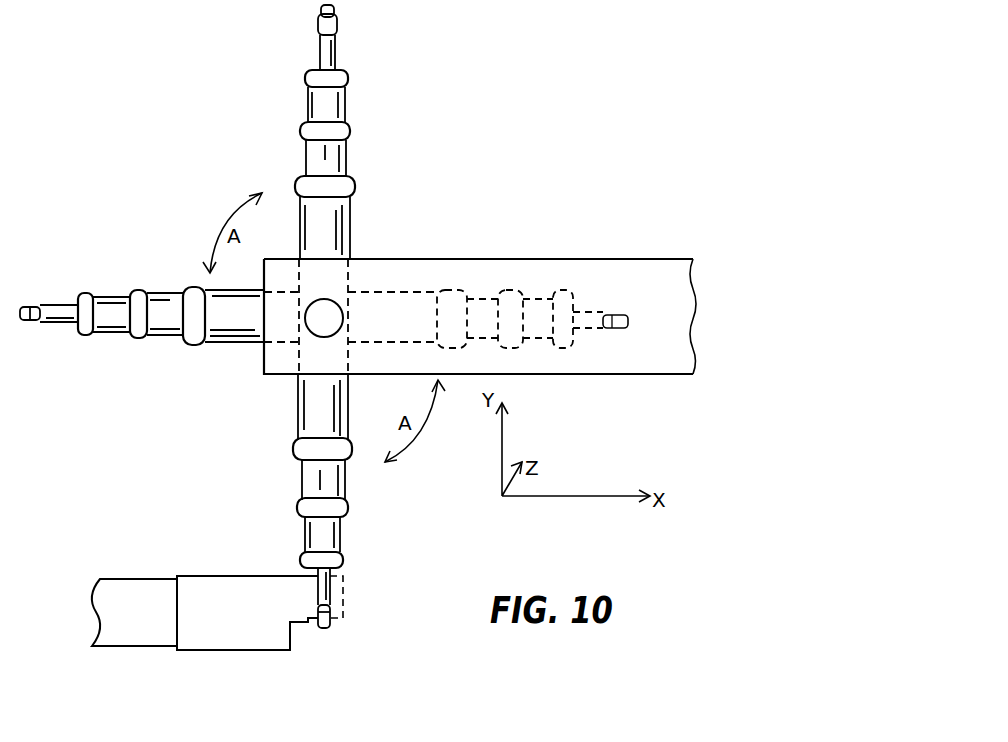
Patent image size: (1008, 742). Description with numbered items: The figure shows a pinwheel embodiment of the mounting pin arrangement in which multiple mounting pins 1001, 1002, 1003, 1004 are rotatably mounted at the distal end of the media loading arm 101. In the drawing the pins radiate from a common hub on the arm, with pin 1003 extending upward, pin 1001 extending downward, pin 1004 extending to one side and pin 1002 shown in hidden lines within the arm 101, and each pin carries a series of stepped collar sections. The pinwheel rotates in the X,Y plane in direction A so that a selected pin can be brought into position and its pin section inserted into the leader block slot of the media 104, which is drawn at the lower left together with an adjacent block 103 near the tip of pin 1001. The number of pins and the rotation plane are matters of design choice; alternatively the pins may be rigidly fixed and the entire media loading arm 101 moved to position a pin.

The media loading arm 101 is at (668, 258).
The mounting pin 1001 is at (343, 528).
The mounting pin 1002 is at (486, 297).
The mounting pin 1003 is at (346, 158).
The mounting pin 1004 is at (118, 295).
The bracket 103 is at (240, 635).
The media 104 is at (128, 590).